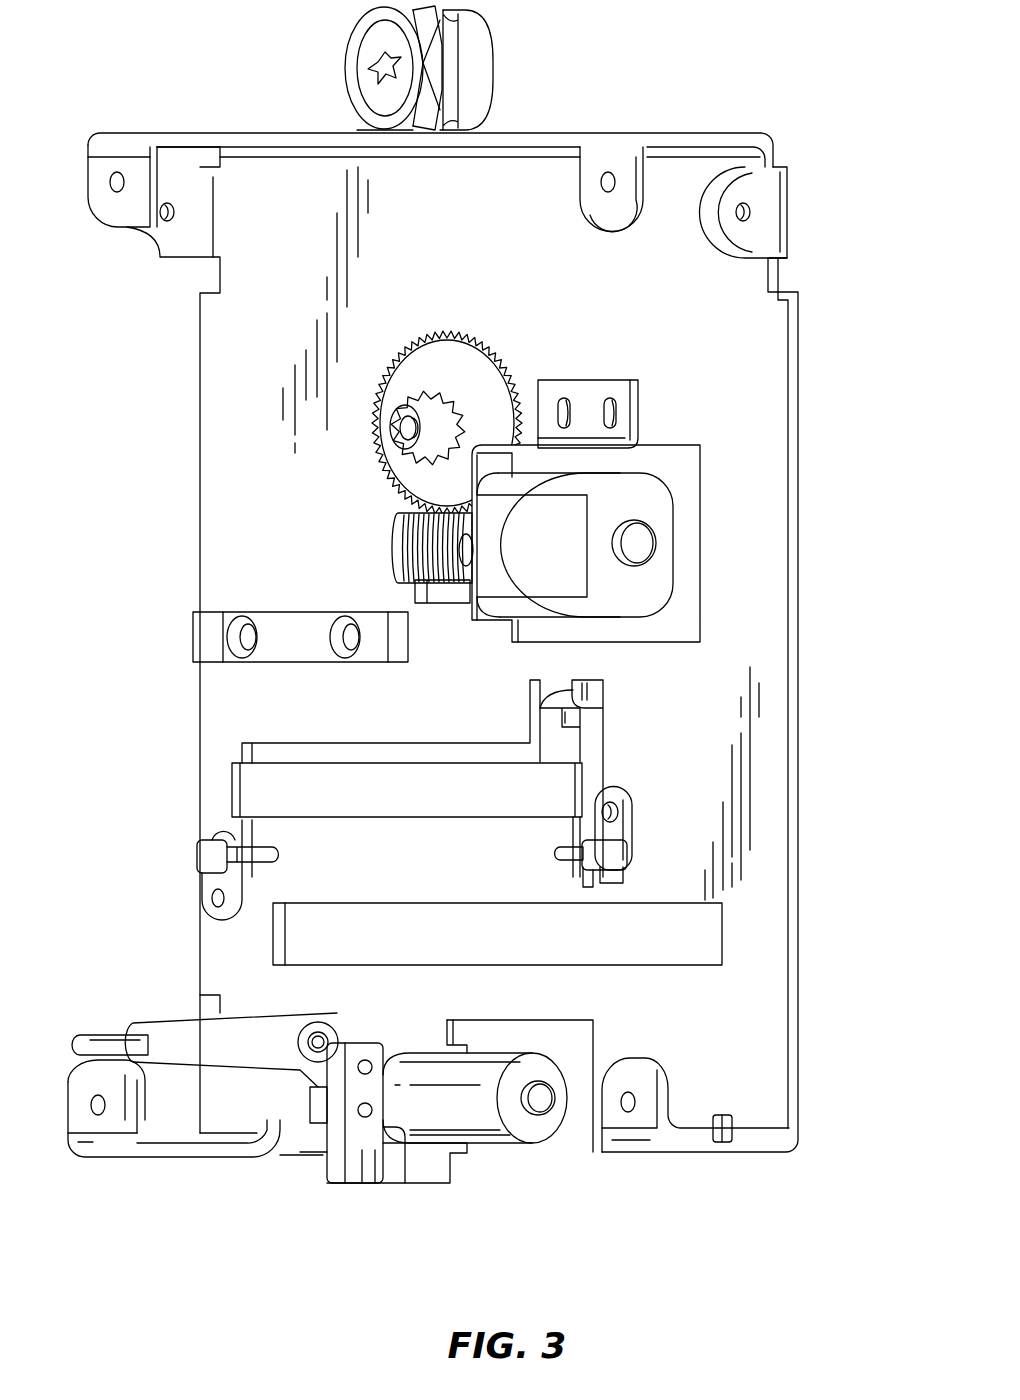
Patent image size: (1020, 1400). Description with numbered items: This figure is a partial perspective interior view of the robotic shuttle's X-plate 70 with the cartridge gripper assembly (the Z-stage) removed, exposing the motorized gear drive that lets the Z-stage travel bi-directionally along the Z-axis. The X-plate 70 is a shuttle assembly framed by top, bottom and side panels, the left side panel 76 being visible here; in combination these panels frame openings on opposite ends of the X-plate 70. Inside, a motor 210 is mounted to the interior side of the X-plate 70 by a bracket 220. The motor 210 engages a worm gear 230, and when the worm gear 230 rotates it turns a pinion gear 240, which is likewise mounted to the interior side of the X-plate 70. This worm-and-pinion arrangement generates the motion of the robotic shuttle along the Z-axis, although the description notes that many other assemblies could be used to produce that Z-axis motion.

The X-plate 70 is at (850, 688).
The left side panel 76 is at (763, 905).
The motor 210 is at (657, 505).
The bracket 220 is at (627, 405).
The worm gear 230 is at (397, 545).
The pinion gear 240 is at (385, 433).